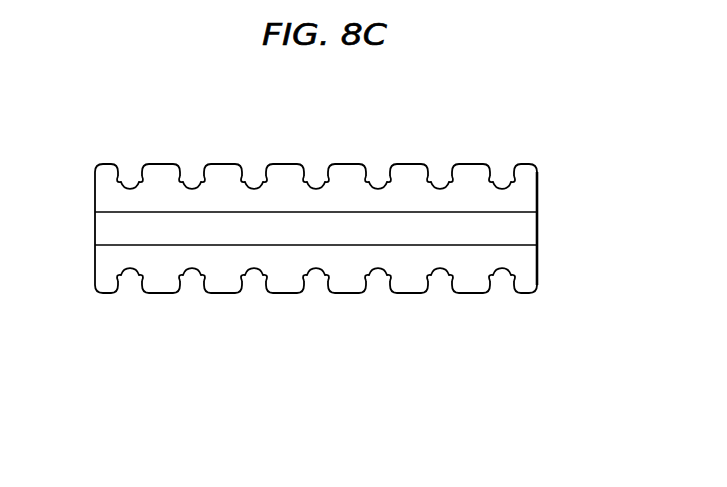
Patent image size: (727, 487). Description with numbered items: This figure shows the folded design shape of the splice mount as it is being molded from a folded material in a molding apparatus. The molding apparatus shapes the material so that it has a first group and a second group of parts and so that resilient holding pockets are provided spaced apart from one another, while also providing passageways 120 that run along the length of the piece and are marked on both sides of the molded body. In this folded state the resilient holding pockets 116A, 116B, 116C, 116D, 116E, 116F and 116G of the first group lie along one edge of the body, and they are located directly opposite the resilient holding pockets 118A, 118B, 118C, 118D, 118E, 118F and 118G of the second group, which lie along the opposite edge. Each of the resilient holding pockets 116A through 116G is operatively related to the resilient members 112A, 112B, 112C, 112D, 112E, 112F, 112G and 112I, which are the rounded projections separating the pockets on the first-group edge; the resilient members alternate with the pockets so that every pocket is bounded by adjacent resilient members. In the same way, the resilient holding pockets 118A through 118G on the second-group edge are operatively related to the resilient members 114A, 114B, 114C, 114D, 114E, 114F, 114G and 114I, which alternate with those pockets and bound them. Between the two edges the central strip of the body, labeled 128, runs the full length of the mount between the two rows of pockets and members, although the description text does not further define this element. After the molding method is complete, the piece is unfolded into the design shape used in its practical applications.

The resilient member 112A is at (105, 163).
The resilient member 112B is at (162, 163).
The resilient member 112C is at (224, 163).
The resilient member 112D is at (286, 163).
The resilient member 112E is at (348, 163).
The resilient member 112F is at (410, 163).
The resilient member 112G is at (472, 163).
The resilient member 112I is at (530, 163).
The resilient holding pocket 116A is at (130, 170).
The resilient holding pocket 116B is at (192, 170).
The resilient holding pocket 116C is at (254, 170).
The resilient holding pocket 116D is at (316, 170).
The resilient holding pocket 116E is at (378, 170).
The resilient holding pocket 116F is at (440, 170).
The resilient holding pocket 116G is at (502, 170).
The resilient member 114A is at (104, 294).
The resilient member 114B is at (162, 294).
The resilient member 114C is at (224, 294).
The resilient member 114D is at (286, 294).
The resilient member 114E is at (348, 294).
The resilient member 114F is at (410, 294).
The resilient member 114G is at (472, 294).
The resilient member 114I is at (530, 294).
The resilient holding pocket 118A is at (130, 287).
The resilient holding pocket 118B is at (192, 287).
The resilient holding pocket 118C is at (254, 287).
The resilient holding pocket 118D is at (316, 287).
The resilient holding pocket 118E is at (378, 287).
The resilient holding pocket 118F is at (440, 287).
The resilient holding pocket 118G is at (502, 287).
The passageway 120 is at (123, 193).
The central strip 128 is at (522, 238).